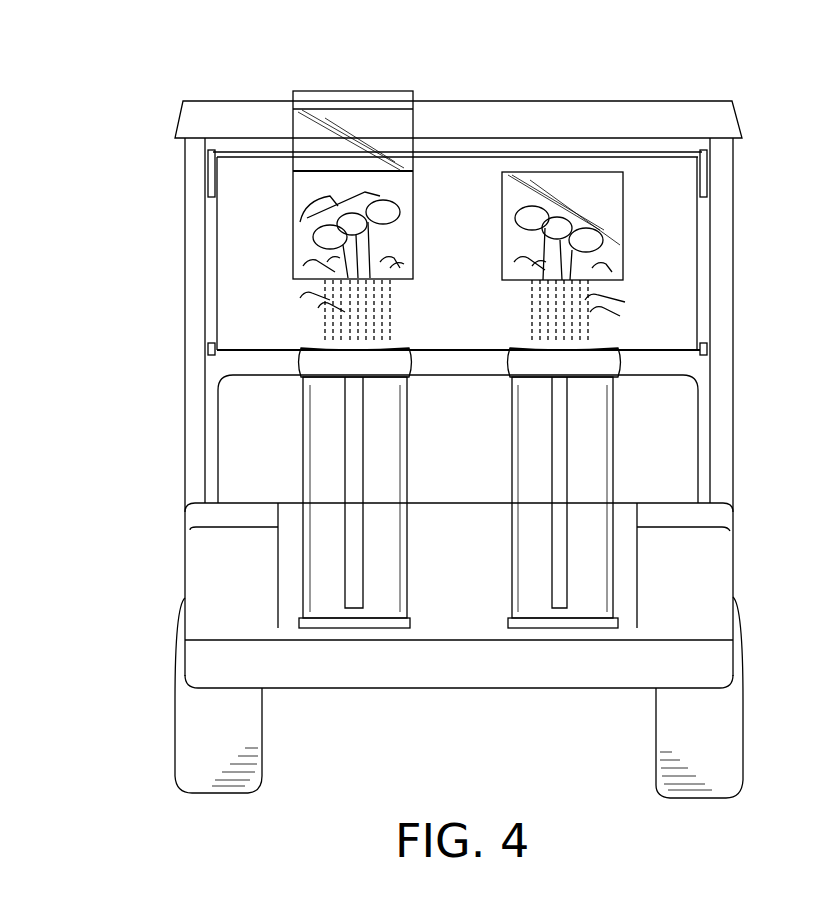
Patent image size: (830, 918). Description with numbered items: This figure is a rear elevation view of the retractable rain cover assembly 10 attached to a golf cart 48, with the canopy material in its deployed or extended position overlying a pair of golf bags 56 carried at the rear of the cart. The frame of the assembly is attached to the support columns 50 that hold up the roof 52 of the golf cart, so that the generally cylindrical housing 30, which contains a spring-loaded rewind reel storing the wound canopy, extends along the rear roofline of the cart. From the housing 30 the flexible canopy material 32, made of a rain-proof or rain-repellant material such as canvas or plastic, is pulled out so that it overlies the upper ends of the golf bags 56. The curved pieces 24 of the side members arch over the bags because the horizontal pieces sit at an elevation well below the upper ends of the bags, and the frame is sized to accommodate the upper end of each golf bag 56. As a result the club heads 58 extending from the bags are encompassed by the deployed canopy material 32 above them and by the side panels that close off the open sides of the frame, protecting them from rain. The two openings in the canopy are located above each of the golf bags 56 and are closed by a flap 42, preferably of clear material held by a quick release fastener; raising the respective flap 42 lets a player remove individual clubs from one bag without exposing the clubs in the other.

The retractable rain cover assembly 10 is at (252, 124).
The curved piece 24 is at (215, 230).
The housing 30 is at (681, 156).
The canopy material 32 is at (673, 239).
The flap 42 is at (357, 97).
The golf cart 48 is at (183, 565).
The support columns 50 is at (183, 390).
The roof 52 is at (657, 103).
The golf bags 56 is at (390, 418).
The club heads 58 is at (328, 216).